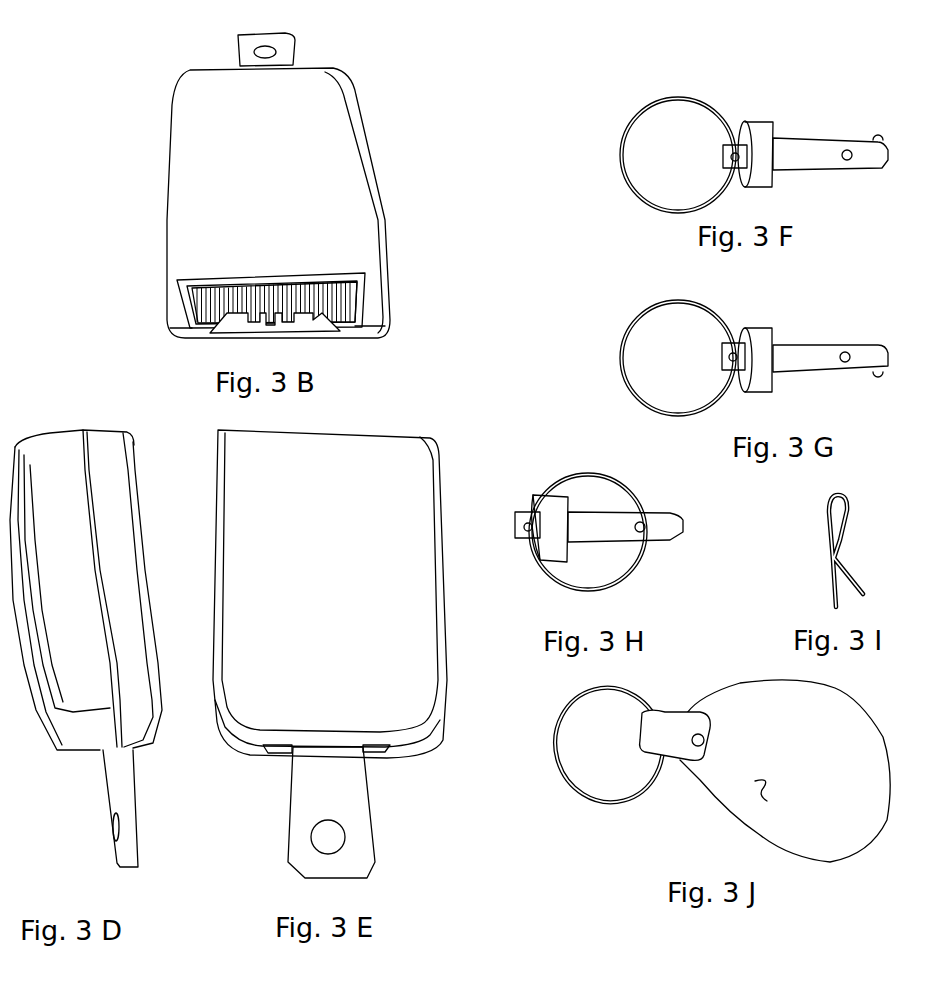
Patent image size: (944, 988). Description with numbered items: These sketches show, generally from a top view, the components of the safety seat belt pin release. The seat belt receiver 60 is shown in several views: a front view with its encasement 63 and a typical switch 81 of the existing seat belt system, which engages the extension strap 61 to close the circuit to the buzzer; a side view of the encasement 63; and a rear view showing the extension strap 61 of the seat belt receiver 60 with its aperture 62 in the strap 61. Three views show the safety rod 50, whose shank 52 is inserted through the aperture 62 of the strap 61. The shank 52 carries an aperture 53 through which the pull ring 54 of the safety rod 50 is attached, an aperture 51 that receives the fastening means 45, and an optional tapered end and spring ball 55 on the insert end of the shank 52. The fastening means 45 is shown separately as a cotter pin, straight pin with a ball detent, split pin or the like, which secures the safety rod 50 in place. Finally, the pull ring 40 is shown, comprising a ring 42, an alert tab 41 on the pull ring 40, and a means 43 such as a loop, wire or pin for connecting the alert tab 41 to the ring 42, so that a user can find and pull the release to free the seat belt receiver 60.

In FIG. 3J, the pull ring 40 is at (719, 798).
In FIG. 3J, the alert tab 41 is at (768, 788).
In FIG. 3J, the ring 42 is at (597, 798).
In FIG. 3J, the means for connecting alert tab to ring 43 is at (695, 747).
In FIG. 3I, the fastening means 45 is at (838, 560).
In FIG. 3F, the safety rod 50 is at (748, 124).
In FIG. 3G, the safety rod 50 is at (729, 357).
In FIG. 3H, the safety rod 50 is at (595, 545).
In FIG. 3F, the aperture for cotter pin 51 is at (849, 150).
In FIG. 3G, the aperture for cotter pin 51 is at (850, 351).
In FIG. 3F, the shank 52 is at (797, 150).
In FIG. 3G, the shank 52 is at (803, 352).
In FIG. 3H, the shank 52 is at (613, 532).
In FIG. 3F, the aperture in shank for pull ring 53 is at (738, 152).
In FIG. 3G, the aperture in shank for pull ring 53 is at (743, 339).
In FIG. 3H, the aperture in shank for pull ring 53 is at (524, 532).
In FIG. 3F, the pull ring of safety rod 54 is at (670, 98).
In FIG. 3G, the pull ring of safety rod 54 is at (626, 386).
In FIG. 3H, the pull ring of safety rod 54 is at (545, 575).
In FIG. 3F, the tapered end and spring ball 55 is at (883, 136).
In FIG. 3G, the tapered end and spring ball 55 is at (882, 379).
In FIG. 3B, the seat belt receiver 60 is at (400, 183).
In FIG. 3D, the seat belt receiver 60 is at (147, 433).
In FIG. 3E, the seat belt receiver 60 is at (452, 668).
In FIG. 3B, the extension strap 61 is at (292, 45).
In FIG. 3D, the extension strap 61 is at (132, 776).
In FIG. 3E, the extension strap 61 is at (297, 843).
In FIG. 3B, the aperture in strap 62 is at (256, 52).
In FIG. 3D, the aperture in strap 62 is at (109, 836).
In FIG. 3D, the encasement 63 is at (60, 457).
In FIG. 3B, the switch 81 is at (282, 318).